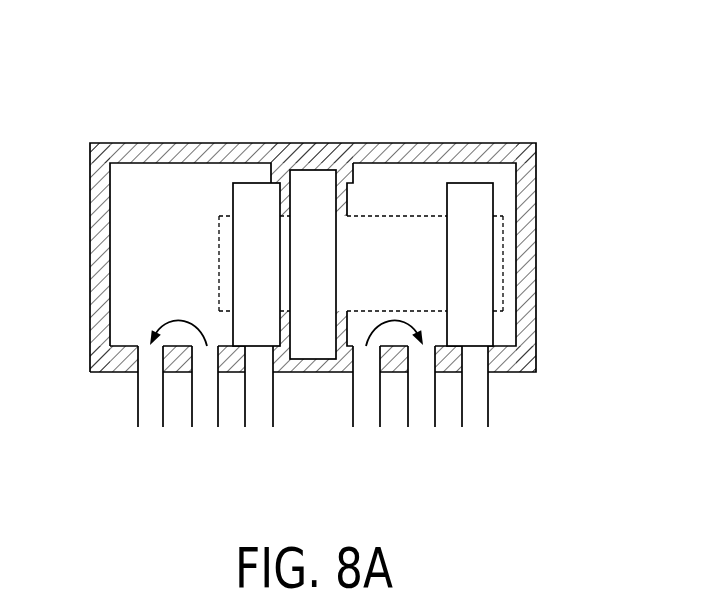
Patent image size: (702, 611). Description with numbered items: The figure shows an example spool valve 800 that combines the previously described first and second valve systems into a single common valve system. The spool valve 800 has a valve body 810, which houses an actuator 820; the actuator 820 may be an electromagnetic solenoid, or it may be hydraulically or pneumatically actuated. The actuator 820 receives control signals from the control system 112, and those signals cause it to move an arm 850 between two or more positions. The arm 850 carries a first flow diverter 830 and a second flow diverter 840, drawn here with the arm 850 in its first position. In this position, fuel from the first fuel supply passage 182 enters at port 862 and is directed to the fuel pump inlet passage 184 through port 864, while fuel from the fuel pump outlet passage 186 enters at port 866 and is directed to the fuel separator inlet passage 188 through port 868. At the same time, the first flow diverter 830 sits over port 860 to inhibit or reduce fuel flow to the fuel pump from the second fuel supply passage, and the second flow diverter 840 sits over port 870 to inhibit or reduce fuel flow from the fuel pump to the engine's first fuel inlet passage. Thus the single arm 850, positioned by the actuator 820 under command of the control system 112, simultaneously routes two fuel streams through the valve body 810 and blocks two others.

The spool valve 800 is at (92, 108).
The valve body 810 is at (537, 210).
The actuator 820 is at (298, 275).
The first flow diverter 830 is at (243, 275).
The second flow diverter 840 is at (455, 275).
The arm 850 is at (383, 275).
The port 860 is at (273, 392).
The port 862 is at (218, 420).
The port 864 is at (137, 400).
The port 866 is at (353, 420).
The port 868 is at (435, 420).
The port 870 is at (488, 385).
The control system 112 is at (313, 153).
The first fuel supply passage 182 is at (205, 419).
The fuel pump inlet passage 184 is at (151, 400).
The fuel pump outlet passage 186 is at (368, 419).
The fuel separator inlet passage 188 is at (422, 400).